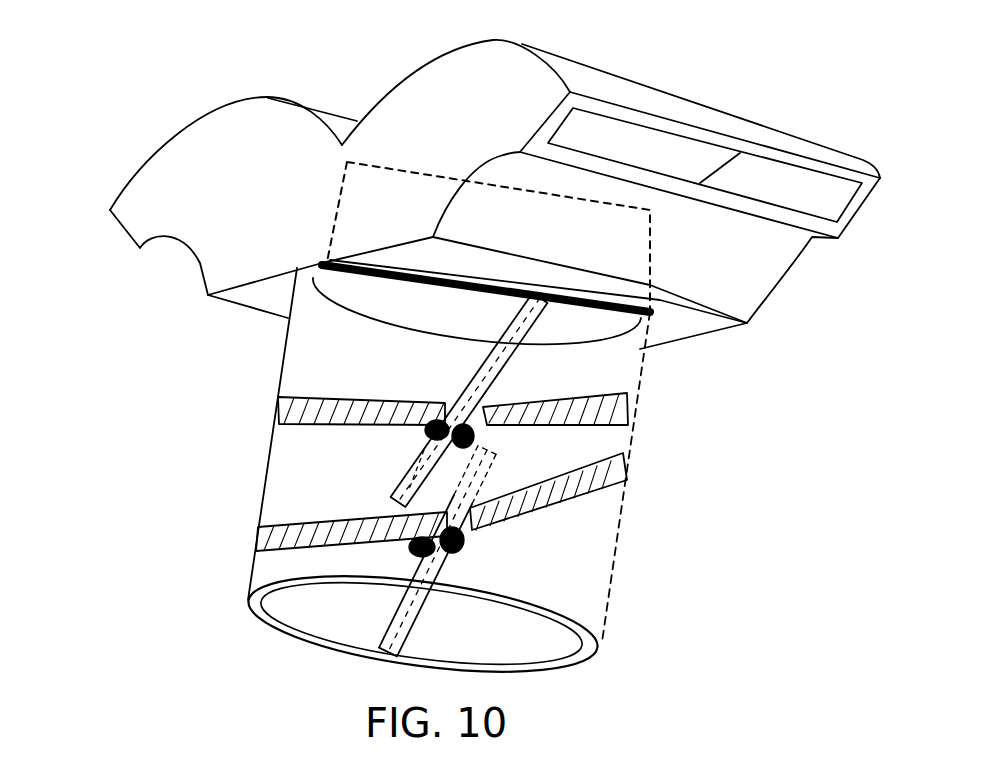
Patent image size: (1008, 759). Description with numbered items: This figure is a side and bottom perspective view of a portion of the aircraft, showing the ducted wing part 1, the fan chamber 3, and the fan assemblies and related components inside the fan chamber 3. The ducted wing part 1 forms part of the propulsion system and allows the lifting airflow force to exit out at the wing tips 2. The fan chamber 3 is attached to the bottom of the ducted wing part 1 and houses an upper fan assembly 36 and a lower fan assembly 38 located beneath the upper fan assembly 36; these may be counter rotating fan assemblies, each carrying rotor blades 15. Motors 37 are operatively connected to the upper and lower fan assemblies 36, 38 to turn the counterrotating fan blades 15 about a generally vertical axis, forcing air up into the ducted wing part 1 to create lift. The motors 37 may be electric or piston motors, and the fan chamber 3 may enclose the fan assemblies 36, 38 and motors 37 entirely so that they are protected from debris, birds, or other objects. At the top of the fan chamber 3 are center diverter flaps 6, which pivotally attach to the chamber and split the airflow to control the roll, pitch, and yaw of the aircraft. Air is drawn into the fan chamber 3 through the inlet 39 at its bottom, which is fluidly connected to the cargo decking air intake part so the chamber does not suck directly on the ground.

The ducted wing part 1 is at (256, 154).
The wing tips 2 is at (852, 167).
The fan chamber 3 is at (631, 346).
The center diverter flaps 6 is at (557, 209).
The rotor blades 15 is at (278, 397).
The upper fan assembly 36 is at (460, 402).
The motors 37 is at (487, 437).
The lower fan assembly 38 is at (420, 538).
The inlet 39 is at (595, 615).